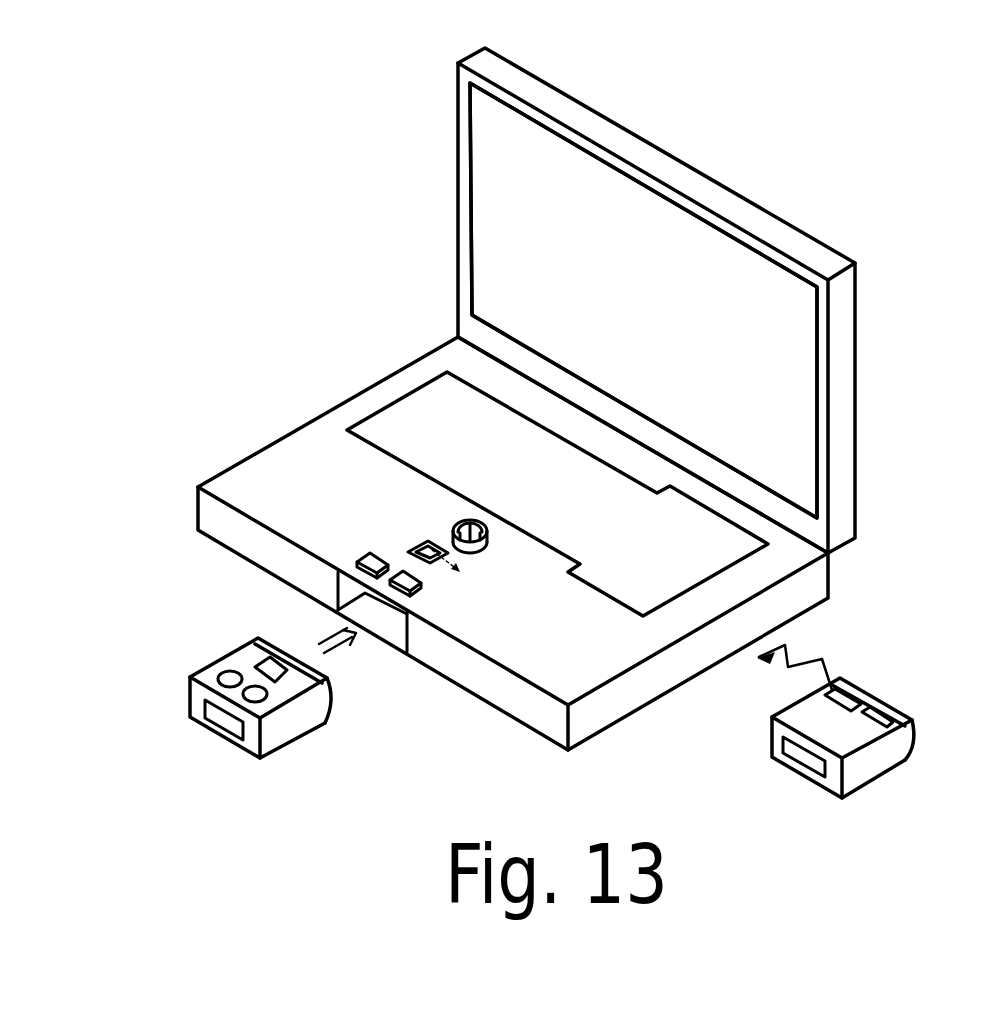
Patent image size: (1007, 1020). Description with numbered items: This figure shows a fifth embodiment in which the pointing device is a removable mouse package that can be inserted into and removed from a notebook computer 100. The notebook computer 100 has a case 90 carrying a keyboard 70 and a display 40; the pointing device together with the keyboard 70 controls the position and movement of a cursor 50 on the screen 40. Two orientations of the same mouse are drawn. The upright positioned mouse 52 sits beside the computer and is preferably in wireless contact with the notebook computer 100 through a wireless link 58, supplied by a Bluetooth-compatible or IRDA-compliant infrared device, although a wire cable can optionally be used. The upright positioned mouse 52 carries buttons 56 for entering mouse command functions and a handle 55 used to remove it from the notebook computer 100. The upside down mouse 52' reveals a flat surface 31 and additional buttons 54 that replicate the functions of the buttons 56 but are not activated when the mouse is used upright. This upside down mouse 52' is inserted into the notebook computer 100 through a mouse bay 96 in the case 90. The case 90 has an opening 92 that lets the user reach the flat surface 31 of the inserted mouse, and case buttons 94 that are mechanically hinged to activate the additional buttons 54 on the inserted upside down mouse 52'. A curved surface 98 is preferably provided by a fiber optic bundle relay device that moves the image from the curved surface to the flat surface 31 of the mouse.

The notebook computer 100 is at (706, 153).
The display 40 is at (795, 287).
The cursor 50 is at (676, 350).
The case 90 is at (817, 588).
The keyboard 70 is at (408, 428).
The opening 92 is at (412, 548).
The case buttons 94 is at (390, 581).
The curved surface 98 is at (488, 536).
The mouse bay 96 is at (390, 620).
The upside down mouse 52' is at (288, 698).
The flat surface 31 is at (255, 668).
The additional buttons 54 is at (219, 681).
The handle 55 is at (242, 728).
The upright positioned mouse 52 is at (876, 748).
The buttons 56 is at (860, 703).
The wireless link 58 is at (792, 670).